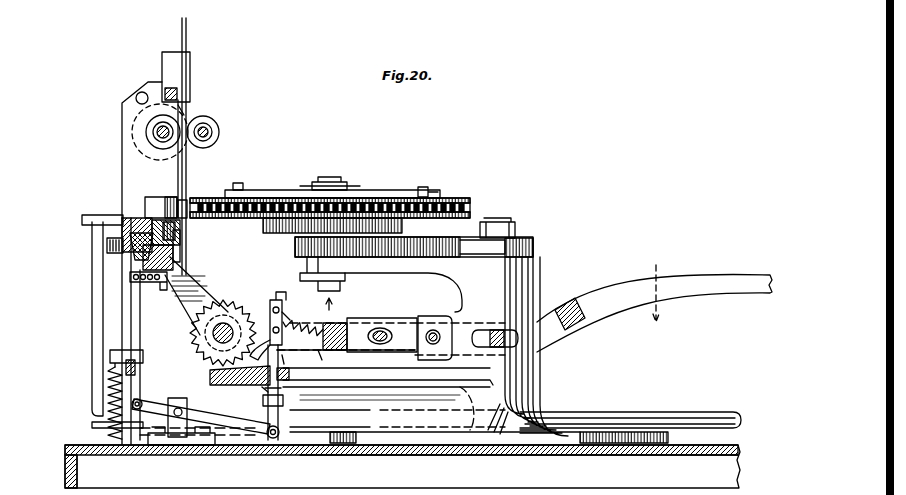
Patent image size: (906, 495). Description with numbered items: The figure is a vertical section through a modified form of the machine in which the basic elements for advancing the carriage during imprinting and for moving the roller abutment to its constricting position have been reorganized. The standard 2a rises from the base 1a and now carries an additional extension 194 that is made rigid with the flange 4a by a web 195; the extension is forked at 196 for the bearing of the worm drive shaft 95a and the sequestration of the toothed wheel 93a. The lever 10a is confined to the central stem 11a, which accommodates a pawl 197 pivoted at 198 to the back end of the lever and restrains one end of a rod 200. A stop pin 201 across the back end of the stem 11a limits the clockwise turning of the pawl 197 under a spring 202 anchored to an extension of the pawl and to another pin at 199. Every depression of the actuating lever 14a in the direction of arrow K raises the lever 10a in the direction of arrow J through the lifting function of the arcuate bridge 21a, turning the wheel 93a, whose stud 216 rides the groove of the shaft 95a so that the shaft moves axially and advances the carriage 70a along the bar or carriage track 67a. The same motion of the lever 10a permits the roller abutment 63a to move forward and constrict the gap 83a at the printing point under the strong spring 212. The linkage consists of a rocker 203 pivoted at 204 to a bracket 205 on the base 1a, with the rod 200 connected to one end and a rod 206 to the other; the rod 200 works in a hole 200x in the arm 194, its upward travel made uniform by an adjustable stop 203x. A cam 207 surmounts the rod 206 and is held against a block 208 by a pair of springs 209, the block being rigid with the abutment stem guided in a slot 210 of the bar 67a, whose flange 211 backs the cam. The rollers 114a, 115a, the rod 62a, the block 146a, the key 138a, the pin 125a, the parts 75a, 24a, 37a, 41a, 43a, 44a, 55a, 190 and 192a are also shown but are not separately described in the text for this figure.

The base 1a is at (68, 445).
The standard 2a is at (537, 288).
The flange 4a is at (432, 446).
The lever 10a is at (345, 322).
The central stem 11a is at (370, 333).
The actuating lever 14a is at (712, 276).
The arcuate bridge 21a is at (408, 320).
The table 24a is at (463, 239).
The bolt 37a is at (314, 179).
The rack 41a is at (458, 198).
The stop blocks 43a is at (244, 190).
The bar 44a is at (395, 190).
The gear 55a is at (470, 212).
The rod 62a is at (187, 38).
The roller abutment 63a is at (158, 197).
The bar or carriage track 67a is at (122, 225).
The carriage 70a is at (130, 196).
The block 75a is at (152, 228).
The gap 83a is at (193, 200).
The toothed wheel 93a is at (258, 316).
The worm drive shaft 95a is at (236, 322).
The roller 114a is at (146, 132).
The roller 115a is at (219, 132).
The pin 125a is at (191, 116).
The key 138a is at (165, 92).
The block 146a is at (162, 62).
The bar 190 is at (667, 412).
The rods 192a is at (97, 341).
The extension 194 is at (416, 382).
The web 195 is at (378, 432).
The fork 196 is at (210, 372).
The pawl 197 is at (293, 361).
The pivot 198 is at (283, 312).
The pin 199 is at (326, 359).
The rod 200 is at (279, 393).
The hole 200x is at (254, 393).
The stop pin 201 is at (296, 312).
The spring 202 is at (315, 329).
The rocker 203 is at (264, 434).
The stop 203x is at (280, 432).
The pivot 204 is at (187, 410).
The bracket 205 is at (176, 438).
The rod 206 is at (148, 322).
The cam 207 is at (128, 258).
The block 208 is at (180, 258).
The springs 209 is at (158, 288).
The slot 210 is at (185, 233).
The flange 211 is at (110, 243).
The spring 212 is at (107, 378).
The stud 216 is at (229, 310).
The arrow j J is at (331, 302).
The arrow k K is at (664, 293).